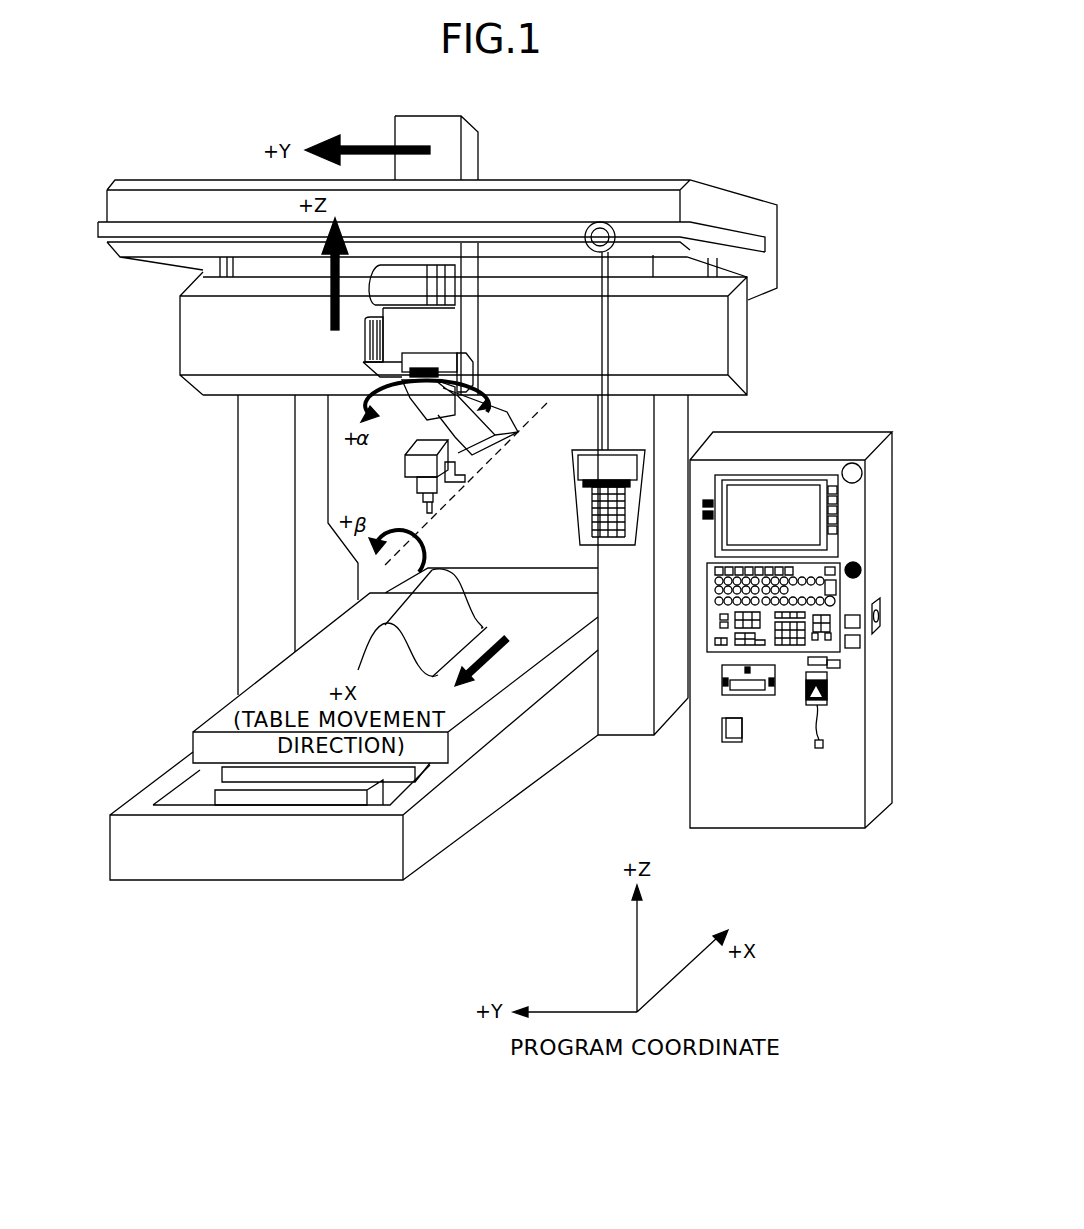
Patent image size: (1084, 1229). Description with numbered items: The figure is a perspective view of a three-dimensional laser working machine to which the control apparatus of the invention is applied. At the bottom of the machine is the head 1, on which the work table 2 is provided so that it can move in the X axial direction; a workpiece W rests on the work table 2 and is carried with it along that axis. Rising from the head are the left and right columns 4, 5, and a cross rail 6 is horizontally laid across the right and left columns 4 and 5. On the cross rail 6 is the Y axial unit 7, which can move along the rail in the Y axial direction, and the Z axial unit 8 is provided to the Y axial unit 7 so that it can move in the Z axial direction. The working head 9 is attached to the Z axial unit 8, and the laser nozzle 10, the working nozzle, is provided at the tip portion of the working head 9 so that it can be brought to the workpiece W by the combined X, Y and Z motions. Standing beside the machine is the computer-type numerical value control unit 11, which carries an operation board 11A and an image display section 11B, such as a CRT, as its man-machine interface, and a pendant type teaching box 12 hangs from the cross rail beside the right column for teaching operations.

The head 1 is at (427, 838).
The work table 2 is at (200, 745).
The left column 4 is at (253, 587).
The right column 5 is at (625, 717).
The cross rail 6 is at (697, 313).
The Y axial unit 7 is at (450, 340).
The Z axial unit 8 is at (452, 143).
The working head 9 is at (415, 460).
The laser nozzle 10 is at (425, 503).
The numerical value control unit 11 is at (823, 810).
The operation board 11A is at (815, 590).
The image display section 11B is at (780, 510).
The pendant type teaching box 12 is at (633, 463).
The workpiece W is at (458, 583).